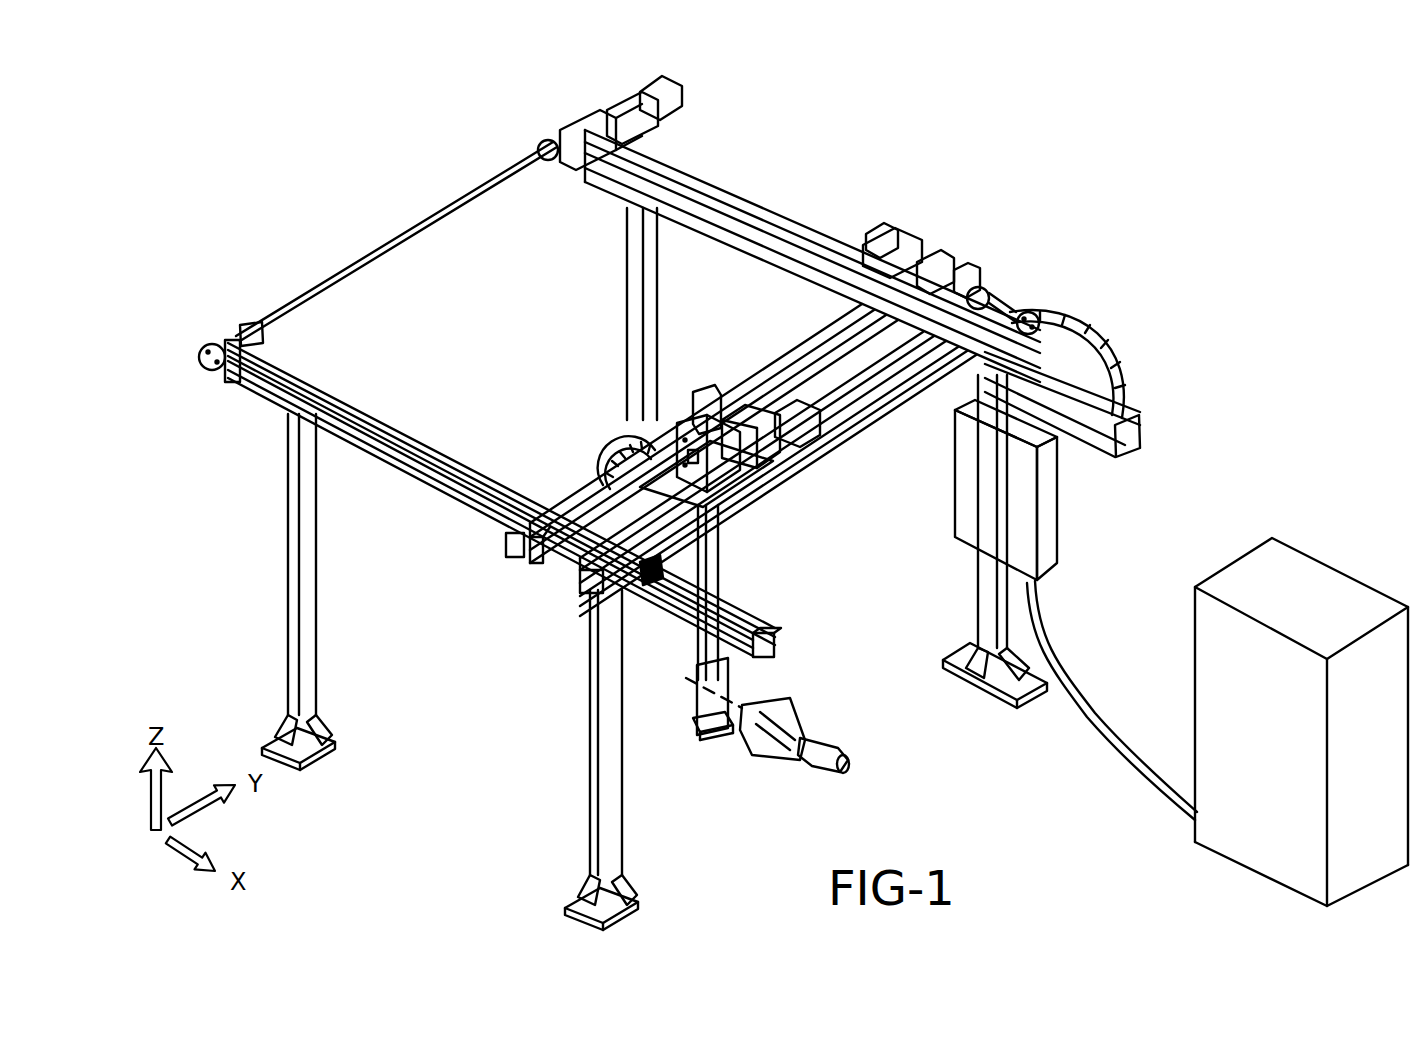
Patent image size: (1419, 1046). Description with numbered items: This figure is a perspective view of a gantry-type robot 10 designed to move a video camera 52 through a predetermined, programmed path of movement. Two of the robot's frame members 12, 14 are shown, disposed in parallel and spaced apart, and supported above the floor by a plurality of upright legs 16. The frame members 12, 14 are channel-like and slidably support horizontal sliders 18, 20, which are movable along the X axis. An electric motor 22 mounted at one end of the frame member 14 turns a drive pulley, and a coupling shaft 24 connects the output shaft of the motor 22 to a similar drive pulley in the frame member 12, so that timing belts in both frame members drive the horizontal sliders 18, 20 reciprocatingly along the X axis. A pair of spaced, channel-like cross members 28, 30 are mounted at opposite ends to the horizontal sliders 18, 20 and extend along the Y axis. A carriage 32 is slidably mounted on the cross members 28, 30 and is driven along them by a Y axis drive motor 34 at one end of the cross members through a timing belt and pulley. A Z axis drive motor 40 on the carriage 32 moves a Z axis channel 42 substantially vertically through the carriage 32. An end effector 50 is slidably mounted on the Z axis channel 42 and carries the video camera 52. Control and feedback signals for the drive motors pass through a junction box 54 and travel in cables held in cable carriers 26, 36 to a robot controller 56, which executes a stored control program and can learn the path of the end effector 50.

The gantry-type robot 10 is at (800, 82).
The frame member 12 is at (482, 516).
The frame member 14 is at (762, 218).
The upright legs 16 is at (625, 295).
The horizontal slider 18 is at (655, 572).
The horizontal slider 20 is at (1082, 420).
The electric motor 22 is at (636, 86).
The coupling shaft 24 is at (425, 216).
The cable carrier 26 is at (1147, 312).
The cross member 28 is at (584, 505).
The cross member 30 is at (770, 492).
The carriage 32 is at (697, 497).
The Y axis drive motor 34 is at (916, 240).
The cable carrier 36 is at (680, 410).
The Z axis drive motor 40 is at (776, 400).
The Z axis channel 42 is at (695, 652).
The end effector 50 is at (712, 740).
The video camera 52 is at (810, 716).
The junction box 54 is at (1048, 556).
The robot controller 56 is at (1287, 556).